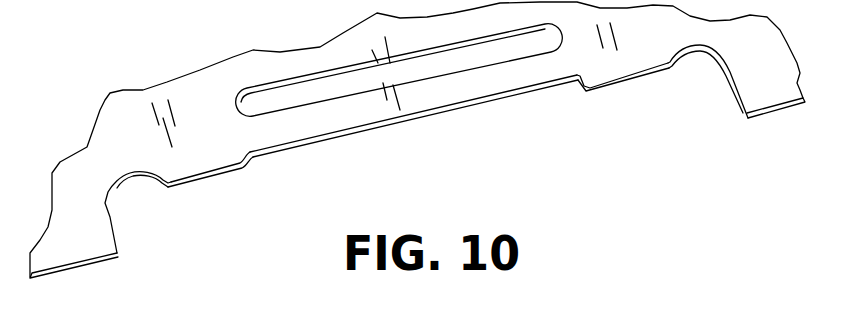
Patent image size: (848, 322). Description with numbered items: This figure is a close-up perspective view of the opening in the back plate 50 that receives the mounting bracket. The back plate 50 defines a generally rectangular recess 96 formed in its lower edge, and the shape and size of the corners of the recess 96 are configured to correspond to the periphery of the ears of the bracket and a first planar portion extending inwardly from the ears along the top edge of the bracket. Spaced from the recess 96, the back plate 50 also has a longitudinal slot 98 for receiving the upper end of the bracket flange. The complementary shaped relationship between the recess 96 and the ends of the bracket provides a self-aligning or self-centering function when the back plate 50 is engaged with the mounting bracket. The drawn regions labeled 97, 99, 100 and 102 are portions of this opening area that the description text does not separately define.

The back plate 50 is at (124, 134).
The recess 96 is at (429, 116).
The first leg 97 is at (129, 180).
The longitudinal slot 98 is at (307, 91).
The second leg 99 is at (703, 53).
The first offset section 100 is at (213, 178).
The second offset section 102 is at (620, 86).